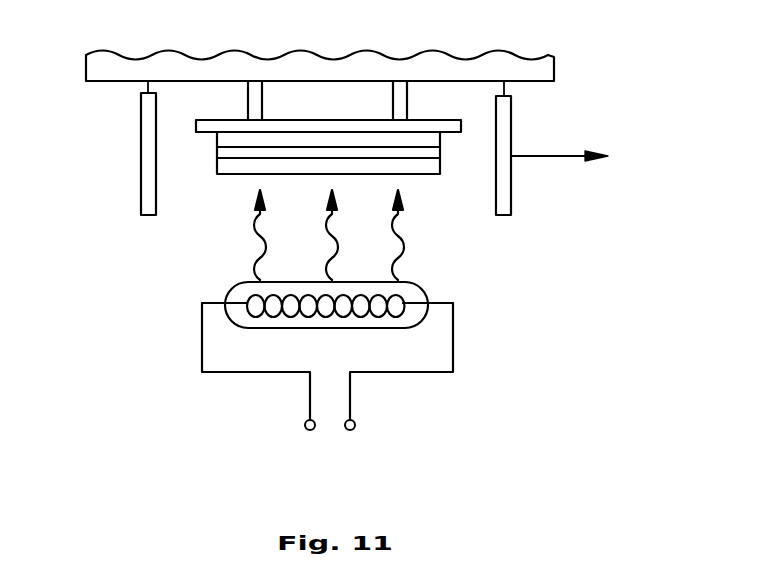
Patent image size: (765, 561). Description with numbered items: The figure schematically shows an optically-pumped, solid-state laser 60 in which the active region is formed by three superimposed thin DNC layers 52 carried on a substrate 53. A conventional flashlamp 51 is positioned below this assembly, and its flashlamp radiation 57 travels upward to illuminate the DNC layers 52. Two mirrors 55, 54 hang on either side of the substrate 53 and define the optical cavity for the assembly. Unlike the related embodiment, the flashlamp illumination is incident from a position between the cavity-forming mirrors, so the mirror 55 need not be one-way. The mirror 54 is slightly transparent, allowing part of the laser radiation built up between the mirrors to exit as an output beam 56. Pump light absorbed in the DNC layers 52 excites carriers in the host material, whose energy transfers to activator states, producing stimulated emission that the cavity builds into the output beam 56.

The optically-pumped laser 60 is at (600, 67).
The mirror 55 is at (147, 122).
The mirror 54 is at (503, 120).
The substrate 53 is at (233, 120).
The DNC layers 52 is at (192, 164).
The output beam 56 is at (542, 156).
The flashlamp radiation 57 is at (430, 216).
The flashlamp 51 is at (428, 290).